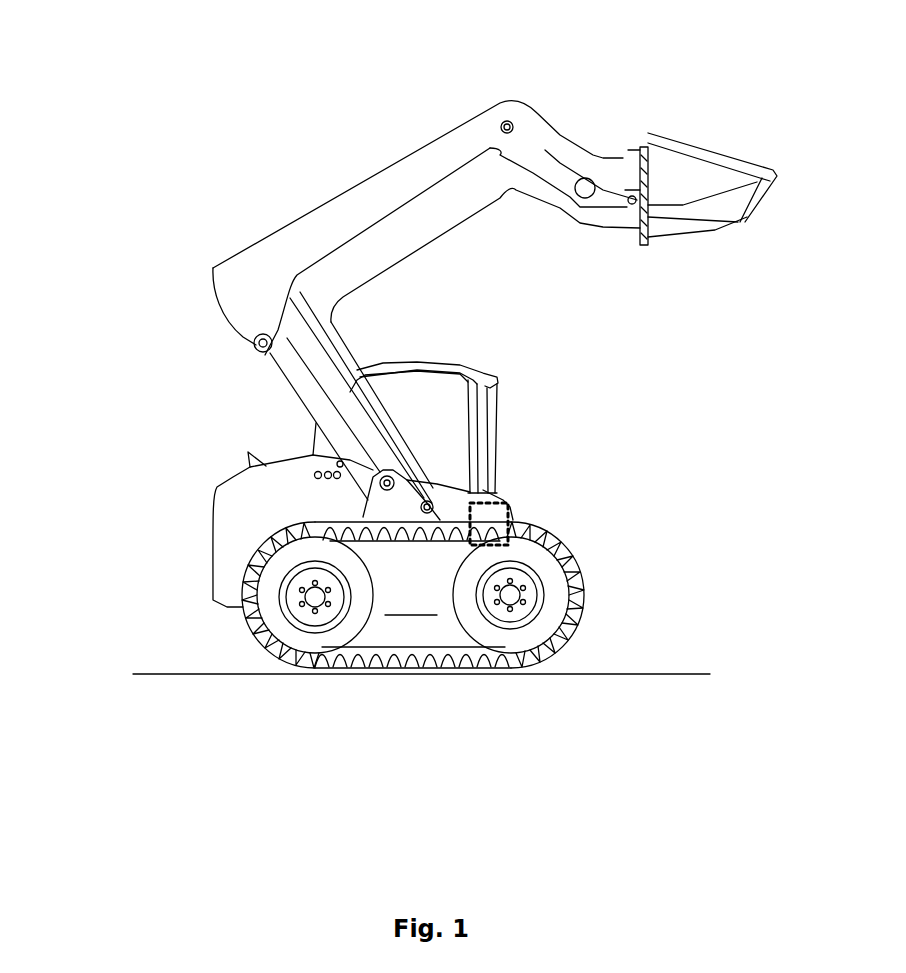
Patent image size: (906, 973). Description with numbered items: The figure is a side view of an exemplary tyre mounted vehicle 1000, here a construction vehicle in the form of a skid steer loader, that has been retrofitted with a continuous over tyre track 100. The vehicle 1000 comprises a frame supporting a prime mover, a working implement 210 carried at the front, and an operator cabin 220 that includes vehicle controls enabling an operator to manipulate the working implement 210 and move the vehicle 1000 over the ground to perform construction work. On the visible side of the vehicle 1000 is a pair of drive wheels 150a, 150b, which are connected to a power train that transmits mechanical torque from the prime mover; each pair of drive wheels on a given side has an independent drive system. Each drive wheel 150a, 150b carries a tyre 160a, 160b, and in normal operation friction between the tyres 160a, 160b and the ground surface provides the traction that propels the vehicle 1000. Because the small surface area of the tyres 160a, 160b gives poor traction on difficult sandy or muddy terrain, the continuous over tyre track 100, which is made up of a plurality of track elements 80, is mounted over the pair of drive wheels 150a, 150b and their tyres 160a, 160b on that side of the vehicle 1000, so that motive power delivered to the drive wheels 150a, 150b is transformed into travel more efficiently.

The tyre mounted vehicle 1000 is at (250, 162).
The continuous over tyre track 100 is at (573, 543).
The working implement 210 is at (697, 170).
The operator cabin 220 is at (480, 417).
The track element 80 is at (487, 517).
The drive wheel 150a is at (537, 597).
The drive wheel 150b is at (290, 592).
The tyre 160a is at (473, 627).
The tyre 160b is at (317, 633).